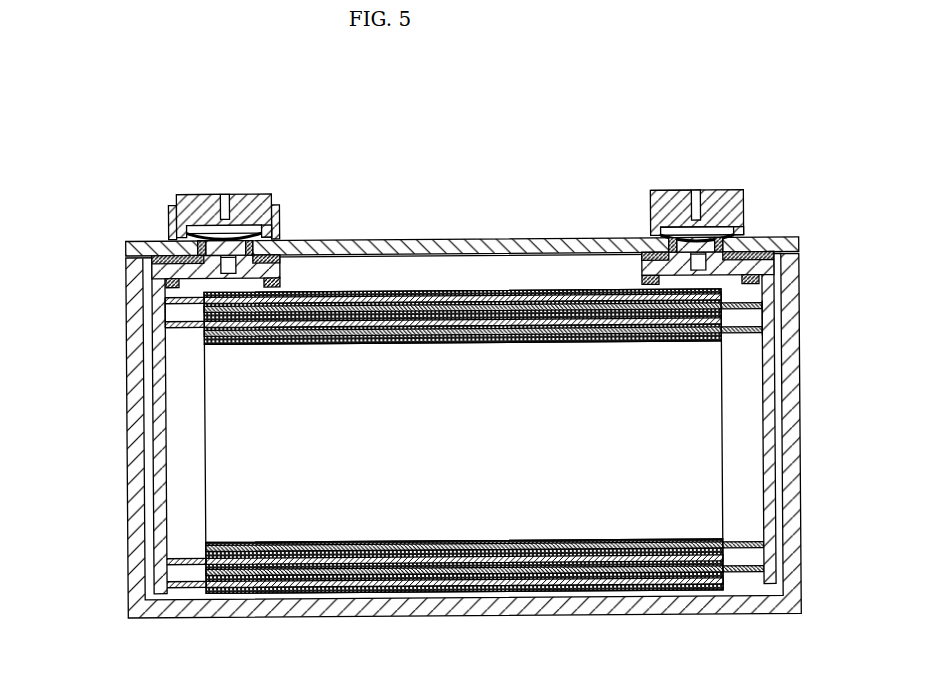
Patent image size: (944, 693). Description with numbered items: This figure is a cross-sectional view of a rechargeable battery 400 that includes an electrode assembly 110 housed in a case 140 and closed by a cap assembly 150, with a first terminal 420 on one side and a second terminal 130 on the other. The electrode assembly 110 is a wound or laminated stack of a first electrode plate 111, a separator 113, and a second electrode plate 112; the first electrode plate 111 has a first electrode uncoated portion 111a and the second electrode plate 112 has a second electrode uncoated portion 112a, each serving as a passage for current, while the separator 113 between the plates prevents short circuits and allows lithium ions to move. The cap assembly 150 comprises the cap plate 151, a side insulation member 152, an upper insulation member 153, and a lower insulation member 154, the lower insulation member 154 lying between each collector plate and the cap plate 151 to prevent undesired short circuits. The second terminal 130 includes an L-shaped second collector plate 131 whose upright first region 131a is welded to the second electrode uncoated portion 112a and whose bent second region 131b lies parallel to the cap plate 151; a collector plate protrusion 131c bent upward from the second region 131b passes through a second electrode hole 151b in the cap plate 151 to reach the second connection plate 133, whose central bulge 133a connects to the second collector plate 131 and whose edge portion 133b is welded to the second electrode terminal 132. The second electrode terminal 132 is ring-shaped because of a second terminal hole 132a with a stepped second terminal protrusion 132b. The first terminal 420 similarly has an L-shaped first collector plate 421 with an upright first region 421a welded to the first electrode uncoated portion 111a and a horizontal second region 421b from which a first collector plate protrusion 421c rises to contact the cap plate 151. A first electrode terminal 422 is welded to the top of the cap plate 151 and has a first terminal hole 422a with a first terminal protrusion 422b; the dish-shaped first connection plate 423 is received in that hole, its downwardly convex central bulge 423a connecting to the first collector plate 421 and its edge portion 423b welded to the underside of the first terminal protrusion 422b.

The rechargeable battery 400 is at (823, 88).
The electrode assembly 110 is at (468, 483).
The first electrode plate 111 is at (627, 594).
The first electrode uncoated portion 111a is at (745, 594).
The second electrode plate 112 is at (340, 596).
The second electrode uncoated portion 112a is at (187, 594).
The separator 113 is at (484, 596).
The second terminal 130 is at (219, 189).
The second collector plate 131 is at (165, 417).
The first region 131a is at (157, 505).
The second region 131b is at (205, 312).
The collector plate protrusion 131c is at (222, 270).
The second electrode terminal 132 is at (226, 184).
The second terminal hole 132a is at (228, 220).
The second terminal protrusion 132b is at (208, 193).
The second connection plate 133 is at (286, 194).
The central bulge 133a is at (292, 242).
The edge portion 133b is at (281, 242).
The case 140 is at (801, 558).
The cap assembly 150 is at (456, 209).
The cap plate 151 is at (508, 242).
The second electrode hole 151b is at (207, 232).
The side insulation member 152 is at (200, 250).
The upper insulation member 153 is at (170, 214).
The lower insulation member 154 is at (160, 262).
The first terminal 420 is at (721, 187).
The first collector plate 421 is at (738, 383).
The first region 421a is at (772, 503).
The second region 421b is at (763, 300).
The first collector plate protrusion 421c is at (680, 258).
The first electrode terminal 422 is at (675, 180).
The first terminal hole 422a is at (698, 196).
The first terminal protrusion 422b is at (657, 194).
The first connection plate 423 is at (753, 193).
The central bulge 423a is at (784, 241).
The edge portion 423b is at (745, 236).